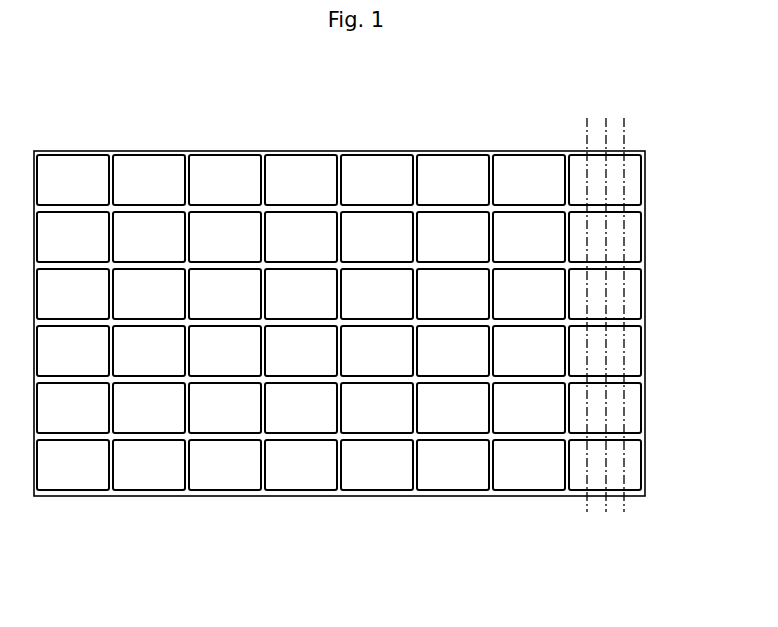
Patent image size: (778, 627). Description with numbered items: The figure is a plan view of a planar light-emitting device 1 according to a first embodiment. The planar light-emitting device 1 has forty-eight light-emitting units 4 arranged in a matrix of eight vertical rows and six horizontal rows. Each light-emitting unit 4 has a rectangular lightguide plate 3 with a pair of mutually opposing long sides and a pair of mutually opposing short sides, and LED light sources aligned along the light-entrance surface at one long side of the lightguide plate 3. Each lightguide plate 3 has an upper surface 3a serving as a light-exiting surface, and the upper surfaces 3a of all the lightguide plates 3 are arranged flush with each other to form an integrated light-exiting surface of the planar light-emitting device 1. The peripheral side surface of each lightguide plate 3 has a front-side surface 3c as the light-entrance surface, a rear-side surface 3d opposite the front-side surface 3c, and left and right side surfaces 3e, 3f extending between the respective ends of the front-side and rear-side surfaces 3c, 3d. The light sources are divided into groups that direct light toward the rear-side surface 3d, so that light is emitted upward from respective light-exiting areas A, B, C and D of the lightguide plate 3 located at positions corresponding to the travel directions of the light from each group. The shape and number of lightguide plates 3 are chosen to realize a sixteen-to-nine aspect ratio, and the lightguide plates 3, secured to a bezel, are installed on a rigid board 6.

The planar light-emitting device 1 is at (368, 122).
The lightguide plate 3 is at (463, 320).
The upper surface 3a is at (402, 495).
The front-side surface 3c is at (314, 496).
The rear-side surface 3d is at (290, 438).
The left side surface 3e is at (265, 467).
The right side surface 3f is at (350, 500).
The light-emitting unit 4 is at (539, 140).
The rigid board 6 is at (148, 152).
The light-exiting area A is at (579, 162).
The light-exiting area B is at (597, 162).
The light-exiting area C is at (617, 162).
The light-exiting area D is at (637, 162).